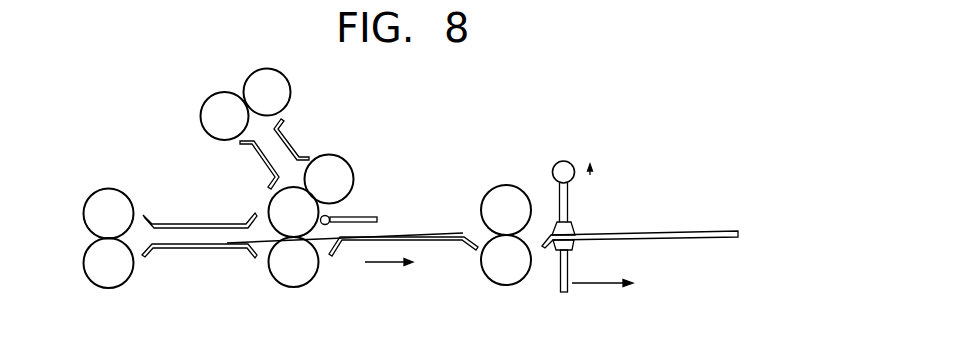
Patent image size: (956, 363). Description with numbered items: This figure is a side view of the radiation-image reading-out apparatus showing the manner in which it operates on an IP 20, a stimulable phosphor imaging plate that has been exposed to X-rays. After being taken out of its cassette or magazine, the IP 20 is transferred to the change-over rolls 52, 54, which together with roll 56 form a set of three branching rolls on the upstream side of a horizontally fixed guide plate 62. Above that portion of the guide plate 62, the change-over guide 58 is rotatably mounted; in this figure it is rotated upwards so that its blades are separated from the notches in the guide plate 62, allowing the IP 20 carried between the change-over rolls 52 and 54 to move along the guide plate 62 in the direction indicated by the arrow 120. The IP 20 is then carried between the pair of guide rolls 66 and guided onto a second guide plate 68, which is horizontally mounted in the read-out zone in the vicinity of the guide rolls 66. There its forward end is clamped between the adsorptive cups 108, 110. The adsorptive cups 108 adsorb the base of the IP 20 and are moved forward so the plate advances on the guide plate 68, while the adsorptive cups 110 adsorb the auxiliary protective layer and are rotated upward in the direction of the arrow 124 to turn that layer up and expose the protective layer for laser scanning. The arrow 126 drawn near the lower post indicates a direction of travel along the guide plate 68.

The IP (stimulable phosphor sheet) 20 is at (267, 240).
The change-over roll 52 is at (303, 270).
The change-over roll 54 is at (282, 207).
The branching roll 56 is at (333, 173).
The change-over guide 58 is at (353, 218).
The guide plate 62 is at (445, 241).
The guiding rolls 66 is at (505, 195).
The guide plate 68 is at (685, 240).
The adsorptive cups 108 is at (568, 243).
The adsorptive cups 110 is at (568, 233).
The arrow 120 is at (384, 263).
The arrow 124 is at (575, 197).
The direction of travel arrow 126 is at (592, 285).